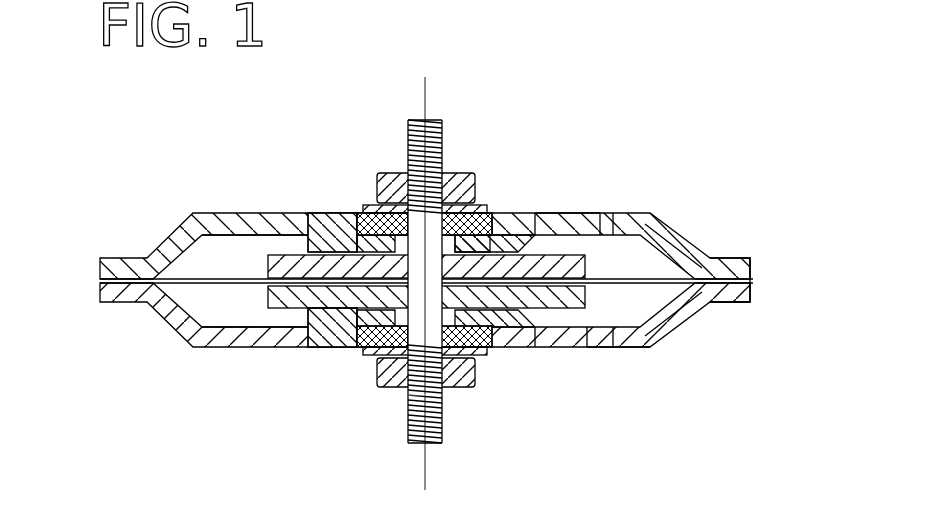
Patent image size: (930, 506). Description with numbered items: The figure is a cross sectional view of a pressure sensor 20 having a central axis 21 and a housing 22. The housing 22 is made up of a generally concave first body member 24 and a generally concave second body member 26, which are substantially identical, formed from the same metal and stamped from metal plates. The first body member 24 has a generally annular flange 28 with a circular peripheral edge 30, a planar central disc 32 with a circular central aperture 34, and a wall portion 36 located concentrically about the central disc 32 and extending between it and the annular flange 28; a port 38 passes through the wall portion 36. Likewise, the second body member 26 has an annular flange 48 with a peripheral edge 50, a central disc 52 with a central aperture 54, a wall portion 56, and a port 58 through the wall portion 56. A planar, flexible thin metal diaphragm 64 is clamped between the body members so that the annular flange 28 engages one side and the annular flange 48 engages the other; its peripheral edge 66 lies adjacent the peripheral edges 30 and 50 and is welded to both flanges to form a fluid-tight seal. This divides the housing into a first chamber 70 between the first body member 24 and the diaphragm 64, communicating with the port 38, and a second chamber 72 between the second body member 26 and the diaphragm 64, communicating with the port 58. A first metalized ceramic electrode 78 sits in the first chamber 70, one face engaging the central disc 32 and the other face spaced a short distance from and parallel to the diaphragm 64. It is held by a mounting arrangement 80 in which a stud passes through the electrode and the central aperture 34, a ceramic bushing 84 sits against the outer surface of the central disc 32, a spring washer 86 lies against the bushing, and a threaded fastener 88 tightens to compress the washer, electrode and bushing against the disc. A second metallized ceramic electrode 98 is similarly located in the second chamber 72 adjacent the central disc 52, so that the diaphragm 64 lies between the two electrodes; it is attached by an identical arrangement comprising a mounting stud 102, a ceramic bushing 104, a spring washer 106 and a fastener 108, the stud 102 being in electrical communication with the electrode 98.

The pressure sensor 20 is at (716, 135).
The central axis 21 is at (427, 105).
The housing 22 is at (700, 227).
The first body member 24 is at (645, 212).
The second body member 26 is at (637, 350).
The annular flange 28 is at (732, 258).
The peripheral edge 30 is at (750, 268).
The central disc 32 is at (537, 230).
The central aperture 34 is at (495, 233).
The wall portion 36 is at (555, 225).
The port 38 is at (602, 223).
The annular flange 48 is at (712, 302).
The peripheral edge 50 is at (753, 292).
The central disc 52 is at (495, 320).
The central aperture 54 is at (455, 315).
The wall portion 56 is at (555, 337).
The port 58 is at (603, 340).
The diaphragm 64 is at (647, 278).
The peripheral edge 66 is at (753, 281).
The first chamber 70 is at (227, 252).
The second chamber 72 is at (225, 310).
The first metalized ceramic electrode 78 is at (275, 253).
The mounting arrangement 80 is at (382, 102).
The ceramic bushing 84 is at (442, 130).
The spring washer 86 is at (358, 207).
The threaded fastener 88 is at (383, 172).
The second metallized ceramic electrode 98 is at (282, 310).
The mounting stud 102 is at (447, 435).
The ceramic bushing 104 is at (362, 347).
The spring washer 106 is at (372, 355).
The fastener 108 is at (397, 390).